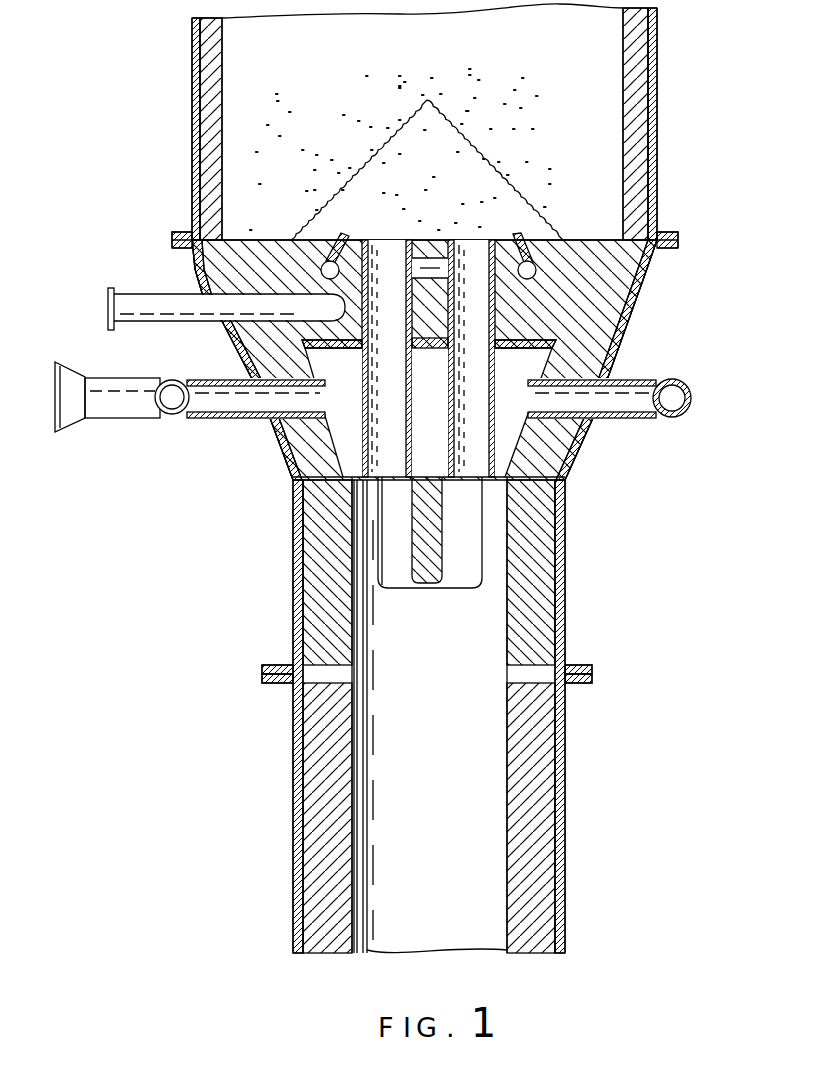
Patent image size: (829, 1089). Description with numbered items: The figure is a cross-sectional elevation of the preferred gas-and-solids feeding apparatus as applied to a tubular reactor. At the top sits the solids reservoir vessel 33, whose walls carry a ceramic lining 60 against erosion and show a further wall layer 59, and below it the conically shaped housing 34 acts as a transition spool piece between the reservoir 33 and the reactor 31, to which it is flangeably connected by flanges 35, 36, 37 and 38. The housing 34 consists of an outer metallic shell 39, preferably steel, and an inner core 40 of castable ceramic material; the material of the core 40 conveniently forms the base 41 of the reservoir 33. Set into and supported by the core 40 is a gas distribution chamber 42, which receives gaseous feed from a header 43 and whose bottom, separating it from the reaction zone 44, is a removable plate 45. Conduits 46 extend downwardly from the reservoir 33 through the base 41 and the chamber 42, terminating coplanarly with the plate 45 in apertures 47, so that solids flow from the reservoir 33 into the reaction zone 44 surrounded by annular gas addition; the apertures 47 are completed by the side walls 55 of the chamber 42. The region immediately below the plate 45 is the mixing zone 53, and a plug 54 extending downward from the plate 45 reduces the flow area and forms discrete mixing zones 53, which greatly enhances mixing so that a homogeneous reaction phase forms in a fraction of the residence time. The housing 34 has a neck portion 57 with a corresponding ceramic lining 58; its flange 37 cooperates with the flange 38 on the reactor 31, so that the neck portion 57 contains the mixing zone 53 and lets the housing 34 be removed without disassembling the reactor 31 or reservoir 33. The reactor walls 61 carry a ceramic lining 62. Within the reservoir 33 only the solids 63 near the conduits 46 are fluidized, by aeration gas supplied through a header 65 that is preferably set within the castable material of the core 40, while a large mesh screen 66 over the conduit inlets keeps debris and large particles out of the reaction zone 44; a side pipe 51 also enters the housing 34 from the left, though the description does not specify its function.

The reactor 31 is at (293, 778).
The solids reservoir vessel 33 is at (480, 59).
The housing 34 is at (632, 305).
The flange 35 is at (672, 232).
The flange 36 is at (668, 249).
The flange 37 is at (586, 665).
The flange 38 is at (590, 683).
The outer metallic shell 39 is at (578, 450).
The inner core 40 is at (305, 440).
The base 41 is at (246, 240).
The gas distribution chamber 42 is at (360, 391).
The header 43 is at (192, 420).
The reaction zone 44 is at (452, 766).
The removable plate 45 is at (432, 466).
The conduits 46 is at (406, 336).
The apertures 47 is at (362, 494).
The side feed pipe 51 is at (357, 333).
The mixing zone 53 is at (402, 557).
The plug 54 is at (441, 533).
The side walls 55 is at (580, 356).
The neck portion 57 is at (298, 598).
The lining 58 is at (545, 512).
The outer shell of hopper wall 59 is at (657, 100).
The ceramic lining 60 is at (636, 52).
The reactor walls 61 is at (565, 760).
The ceramic lining 62 is at (545, 800).
The solids 63 is at (442, 199).
The header 65 is at (300, 246).
The large mesh screen 66 is at (392, 130).